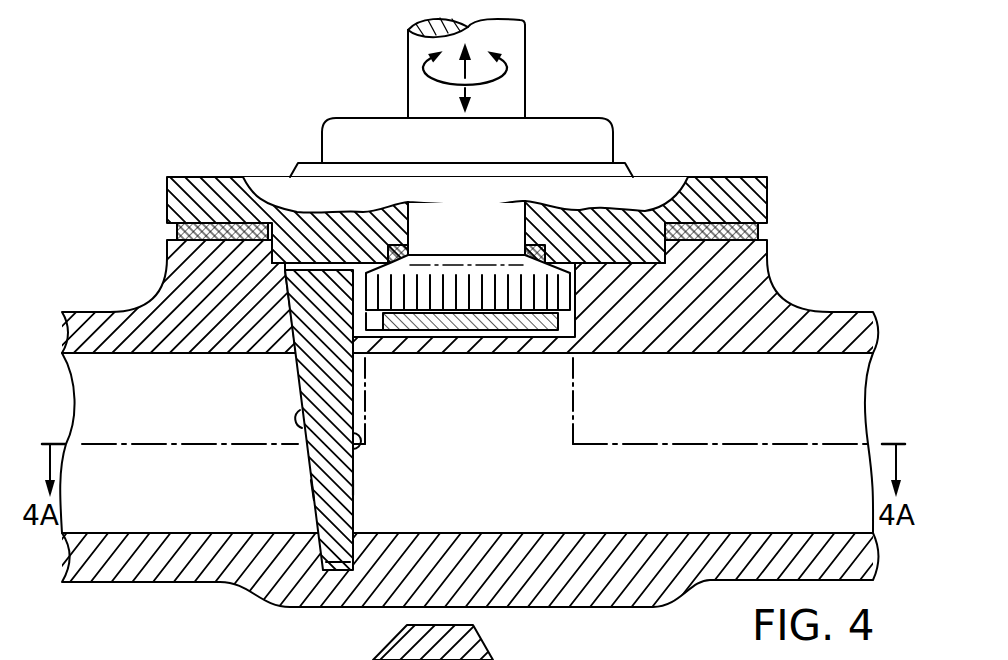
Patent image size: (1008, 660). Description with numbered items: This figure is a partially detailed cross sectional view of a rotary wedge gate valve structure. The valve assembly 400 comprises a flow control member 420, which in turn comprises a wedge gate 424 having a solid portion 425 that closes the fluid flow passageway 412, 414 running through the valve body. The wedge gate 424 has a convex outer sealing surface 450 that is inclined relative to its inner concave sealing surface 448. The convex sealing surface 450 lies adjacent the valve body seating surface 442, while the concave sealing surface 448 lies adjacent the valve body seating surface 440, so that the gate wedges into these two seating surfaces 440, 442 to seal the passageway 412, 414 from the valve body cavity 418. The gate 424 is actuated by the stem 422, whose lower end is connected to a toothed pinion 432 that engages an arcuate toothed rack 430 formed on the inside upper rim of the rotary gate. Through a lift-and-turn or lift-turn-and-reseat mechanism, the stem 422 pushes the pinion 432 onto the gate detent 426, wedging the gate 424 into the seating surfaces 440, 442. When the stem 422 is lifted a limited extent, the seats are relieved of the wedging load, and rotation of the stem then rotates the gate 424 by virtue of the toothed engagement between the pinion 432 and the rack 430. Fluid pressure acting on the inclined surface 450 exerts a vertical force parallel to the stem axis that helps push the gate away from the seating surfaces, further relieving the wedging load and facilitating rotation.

The valve assembly 400 is at (722, 161).
The fluid flow passageway 412 is at (850, 435).
The fluid flow passageway 414 is at (118, 439).
The valve body cavity 418 is at (570, 263).
The flow control member 420 is at (316, 258).
The stem 422 is at (530, 89).
The wedge gate 424 is at (312, 350).
The solid portion 425 is at (343, 514).
The gate detent 426 is at (503, 325).
The arcuate toothed rack 430 is at (368, 312).
The toothed pinion 432 is at (562, 297).
The valve body seating surface 440 is at (355, 455).
The valve body seating surface 442 is at (300, 406).
The concave sealing surface 448 is at (353, 487).
The convex outer sealing surface 450 is at (315, 490).